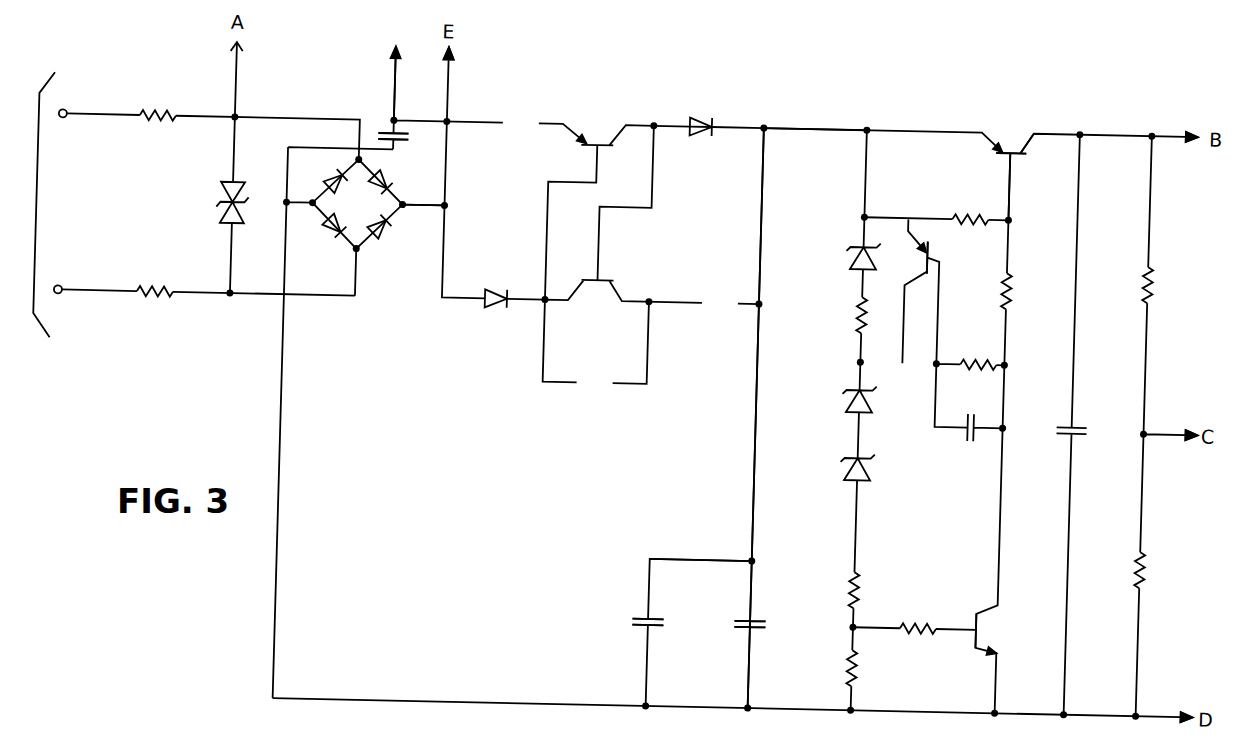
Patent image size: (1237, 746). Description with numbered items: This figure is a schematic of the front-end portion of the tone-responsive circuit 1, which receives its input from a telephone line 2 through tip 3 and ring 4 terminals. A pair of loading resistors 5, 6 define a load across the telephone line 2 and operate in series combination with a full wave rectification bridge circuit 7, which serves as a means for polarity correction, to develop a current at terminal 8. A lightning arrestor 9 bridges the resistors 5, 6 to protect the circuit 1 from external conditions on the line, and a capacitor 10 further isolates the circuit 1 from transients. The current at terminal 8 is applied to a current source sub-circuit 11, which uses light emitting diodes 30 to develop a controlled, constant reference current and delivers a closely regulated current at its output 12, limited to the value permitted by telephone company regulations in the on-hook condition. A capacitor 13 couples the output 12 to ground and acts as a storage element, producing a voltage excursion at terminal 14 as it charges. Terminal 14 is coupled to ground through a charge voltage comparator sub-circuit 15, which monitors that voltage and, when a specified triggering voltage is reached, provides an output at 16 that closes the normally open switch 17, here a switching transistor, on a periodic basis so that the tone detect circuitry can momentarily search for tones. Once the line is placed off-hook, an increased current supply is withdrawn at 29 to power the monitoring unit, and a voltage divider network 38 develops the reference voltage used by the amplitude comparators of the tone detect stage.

The tone-responsive circuit 1 is at (874, 71).
The telephone line 2 is at (42, 157).
The tip terminal 3 is at (69, 114).
The ring terminal 4 is at (71, 284).
The loading resistor 5 is at (168, 113).
The loading resistor 6 is at (178, 286).
The full wave rectification circuit 7 is at (356, 205).
The terminal 8 is at (431, 198).
The lightning arrestor 9 is at (252, 185).
The capacitor 10 is at (409, 132).
The current source sub-circuit 11 is at (606, 103).
The output of the current source sub-circuit 12 is at (738, 110).
The capacitor 13 is at (697, 618).
The terminal 14 is at (771, 107).
The charge voltage comparator sub-circuit 15 is at (925, 174).
The output of the charge voltage comparator sub-circuit 16 is at (1015, 167).
The switch 17 is at (1017, 115).
The increased current supply output 29 is at (397, 35).
The light emitting diodes 30 is at (500, 280).
The voltage divider network 38 is at (1164, 339).